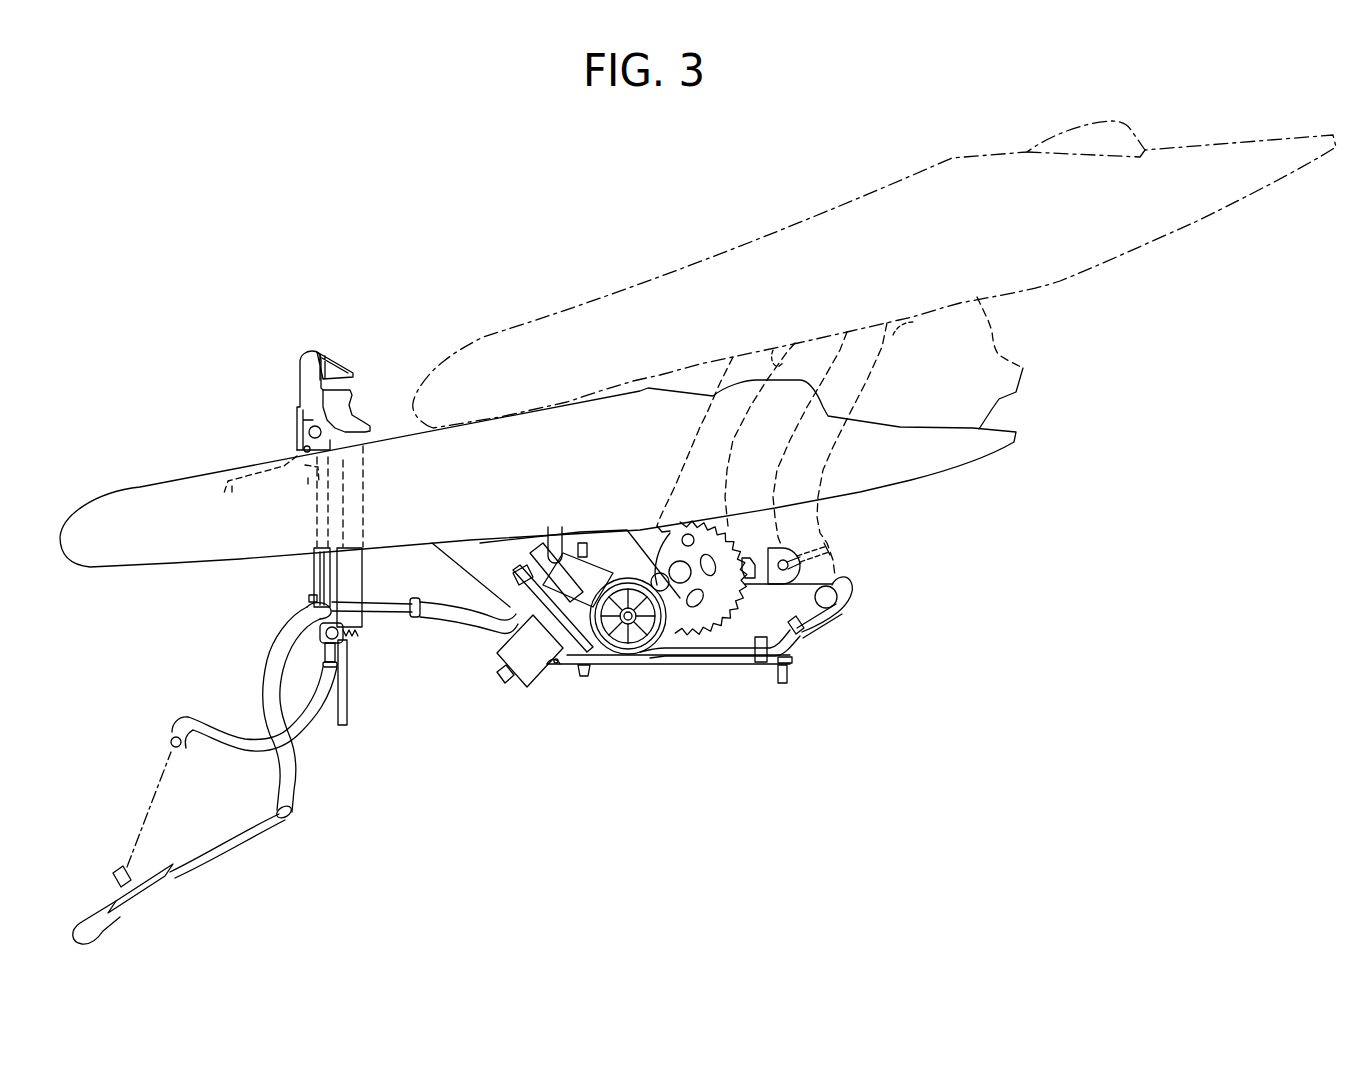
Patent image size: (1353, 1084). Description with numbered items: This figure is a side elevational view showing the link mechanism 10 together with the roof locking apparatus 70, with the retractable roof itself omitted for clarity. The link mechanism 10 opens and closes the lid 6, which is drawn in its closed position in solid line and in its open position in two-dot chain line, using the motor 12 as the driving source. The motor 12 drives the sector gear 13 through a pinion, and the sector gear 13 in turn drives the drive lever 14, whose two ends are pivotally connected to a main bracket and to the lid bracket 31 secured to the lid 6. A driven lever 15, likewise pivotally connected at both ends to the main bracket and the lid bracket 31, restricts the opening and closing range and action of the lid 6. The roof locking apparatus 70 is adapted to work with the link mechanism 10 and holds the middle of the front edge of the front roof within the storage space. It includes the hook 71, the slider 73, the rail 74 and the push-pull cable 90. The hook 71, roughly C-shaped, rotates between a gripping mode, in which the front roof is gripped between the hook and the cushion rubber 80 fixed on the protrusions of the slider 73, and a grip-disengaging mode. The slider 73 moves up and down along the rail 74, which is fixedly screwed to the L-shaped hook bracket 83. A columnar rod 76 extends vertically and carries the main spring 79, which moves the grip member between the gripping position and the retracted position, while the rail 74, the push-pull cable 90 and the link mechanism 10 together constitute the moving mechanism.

The lid 6 is at (1010, 376).
The link mechanism 10 is at (643, 667).
The motor 12 is at (543, 681).
The sector gear 13 is at (720, 634).
The drive lever 14 is at (796, 343).
The driven lever 15 is at (874, 395).
The lid bracket 31 is at (911, 324).
The roof locking apparatus 70 is at (298, 386).
The hook 71 is at (335, 358).
The slider 73 is at (362, 575).
The rail 74 is at (313, 585).
The rod 76 is at (347, 690).
The main spring 79 is at (356, 636).
The cushion rubber 80 is at (355, 411).
The hook bracket 83 is at (253, 465).
The push-pull cable 90 is at (450, 620).